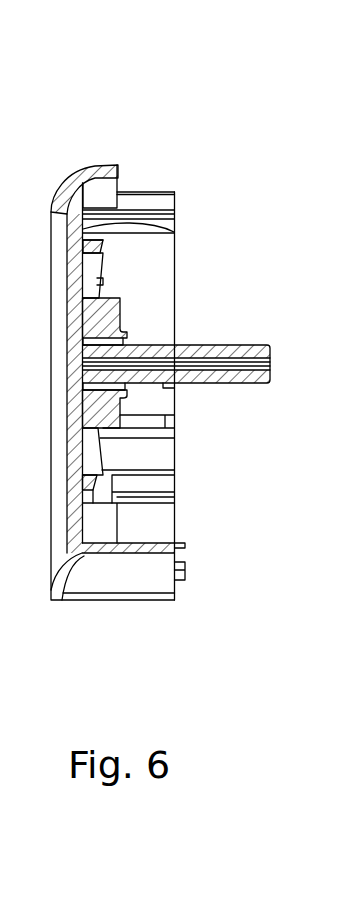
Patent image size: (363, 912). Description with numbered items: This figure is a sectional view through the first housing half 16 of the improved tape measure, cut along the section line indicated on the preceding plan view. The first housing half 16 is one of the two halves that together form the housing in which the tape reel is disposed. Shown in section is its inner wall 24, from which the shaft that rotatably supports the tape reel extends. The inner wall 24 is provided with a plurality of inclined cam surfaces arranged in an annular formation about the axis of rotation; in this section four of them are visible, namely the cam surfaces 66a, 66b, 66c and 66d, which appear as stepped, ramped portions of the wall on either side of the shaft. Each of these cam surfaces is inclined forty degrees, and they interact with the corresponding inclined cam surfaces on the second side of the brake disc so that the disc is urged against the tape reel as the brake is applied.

The first housing half 16 is at (118, 167).
The inner wall 24 is at (174, 232).
The inclined cam surface 66d is at (103, 248).
The inclined cam surface 66c is at (103, 285).
The inclined cam surface 66b is at (98, 430).
The inclined cam surface 66a is at (108, 475).